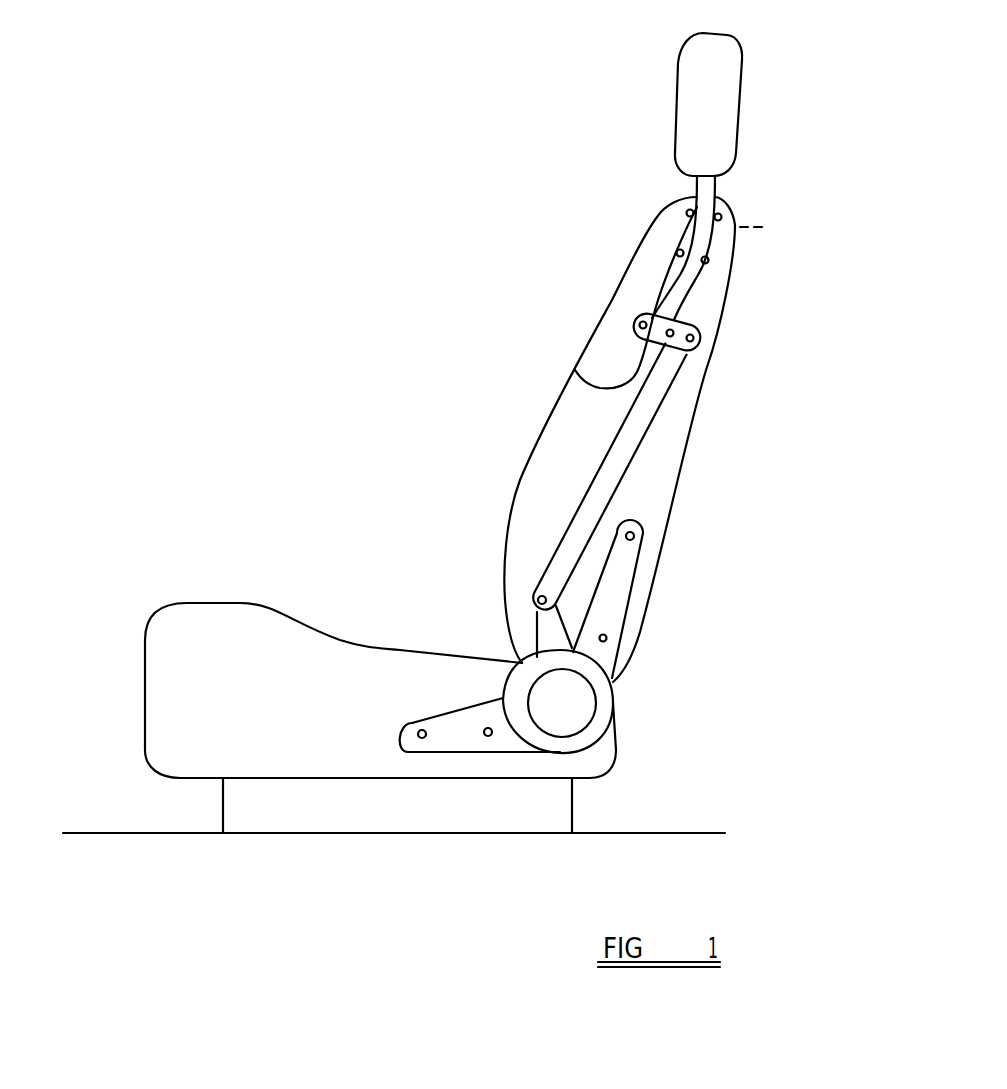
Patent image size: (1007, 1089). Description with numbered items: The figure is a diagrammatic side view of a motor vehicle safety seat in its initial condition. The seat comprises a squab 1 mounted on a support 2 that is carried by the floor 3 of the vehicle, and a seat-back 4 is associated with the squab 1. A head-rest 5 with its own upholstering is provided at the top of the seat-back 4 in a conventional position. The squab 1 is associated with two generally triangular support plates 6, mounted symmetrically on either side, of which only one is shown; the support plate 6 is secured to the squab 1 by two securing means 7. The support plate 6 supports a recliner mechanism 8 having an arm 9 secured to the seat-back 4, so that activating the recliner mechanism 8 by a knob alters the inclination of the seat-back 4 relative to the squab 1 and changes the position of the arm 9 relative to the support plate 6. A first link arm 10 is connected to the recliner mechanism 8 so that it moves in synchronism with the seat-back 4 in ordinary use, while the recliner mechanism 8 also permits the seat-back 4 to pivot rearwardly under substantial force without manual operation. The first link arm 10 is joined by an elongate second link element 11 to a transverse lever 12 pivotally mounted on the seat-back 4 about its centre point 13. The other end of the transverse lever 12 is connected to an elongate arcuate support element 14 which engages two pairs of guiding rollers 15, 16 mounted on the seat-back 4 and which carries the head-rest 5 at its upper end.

The squab 1 is at (180, 702).
The support 2 is at (260, 810).
The floor 3 is at (128, 835).
The seat-back 4 is at (717, 492).
The head-rest 5 is at (771, 102).
The support plate 6 is at (456, 743).
The securing means 7 is at (422, 738).
The recliner mechanism 8 is at (575, 709).
The arm 9 is at (617, 597).
The first link arm 10 is at (550, 628).
The second link element 11 is at (597, 495).
The transverse lever 12 is at (680, 327).
The centre point 13 is at (605, 388).
The arcuate support element 14 is at (695, 245).
The guiding rollers 15 is at (708, 262).
The guiding rollers 16 is at (721, 216).